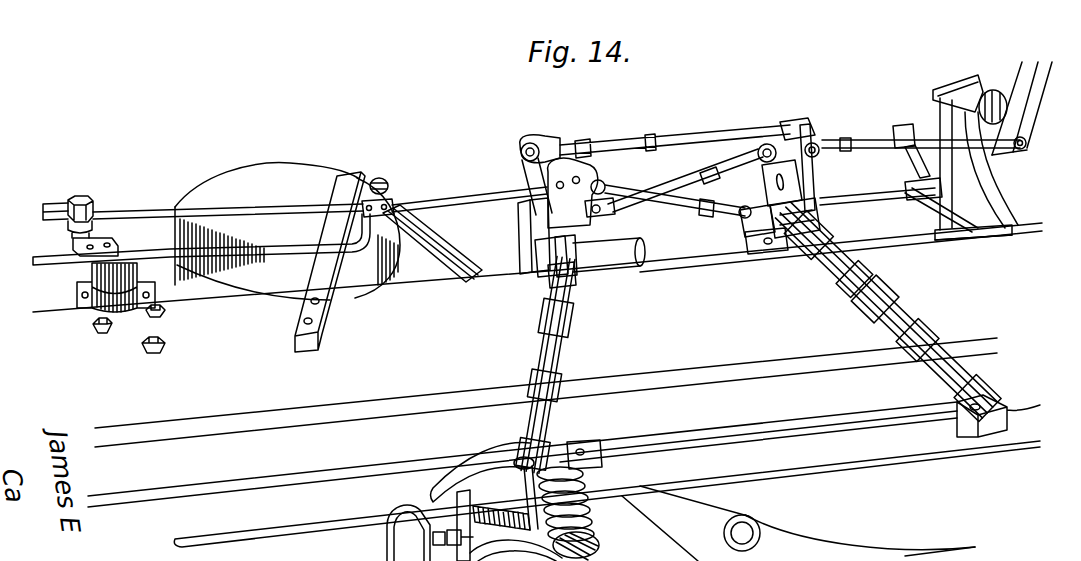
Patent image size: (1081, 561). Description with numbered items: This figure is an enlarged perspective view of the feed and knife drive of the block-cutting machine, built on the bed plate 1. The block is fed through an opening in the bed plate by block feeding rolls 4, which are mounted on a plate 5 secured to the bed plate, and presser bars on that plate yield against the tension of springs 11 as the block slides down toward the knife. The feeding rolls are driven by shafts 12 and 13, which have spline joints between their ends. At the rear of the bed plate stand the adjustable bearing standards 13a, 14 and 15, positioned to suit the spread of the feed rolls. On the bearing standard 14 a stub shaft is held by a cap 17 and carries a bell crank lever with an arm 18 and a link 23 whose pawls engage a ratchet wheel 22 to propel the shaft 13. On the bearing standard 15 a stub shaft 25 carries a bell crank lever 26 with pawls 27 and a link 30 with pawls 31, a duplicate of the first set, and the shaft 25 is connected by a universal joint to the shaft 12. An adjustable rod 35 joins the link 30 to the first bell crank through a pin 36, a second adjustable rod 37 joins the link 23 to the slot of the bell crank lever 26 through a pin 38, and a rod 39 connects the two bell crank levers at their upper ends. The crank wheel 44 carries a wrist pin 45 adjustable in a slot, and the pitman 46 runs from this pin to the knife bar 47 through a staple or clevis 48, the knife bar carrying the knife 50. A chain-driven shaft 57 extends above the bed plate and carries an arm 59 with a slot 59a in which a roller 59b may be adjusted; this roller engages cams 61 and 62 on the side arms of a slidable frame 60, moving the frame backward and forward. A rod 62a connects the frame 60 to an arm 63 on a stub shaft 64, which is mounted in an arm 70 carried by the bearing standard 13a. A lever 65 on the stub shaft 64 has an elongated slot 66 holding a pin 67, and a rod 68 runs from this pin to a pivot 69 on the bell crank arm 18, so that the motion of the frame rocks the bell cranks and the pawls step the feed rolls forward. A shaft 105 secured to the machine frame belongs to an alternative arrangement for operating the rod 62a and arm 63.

The bed plate 1 is at (537, 385).
The block feeding rolls 4 is at (650, 515).
The plate 5 is at (333, 549).
The springs 11 is at (497, 530).
The shaft 12 is at (568, 322).
The shaft 13 is at (885, 292).
The bearing standard 13a is at (990, 221).
The bearing standard 14 is at (768, 247).
The bearing standard 15 is at (537, 260).
The cap 17 is at (807, 212).
The arm of bell crank lever 18 is at (807, 168).
The ratchet wheel 22 is at (823, 205).
The link 23 is at (789, 183).
The stub shaft 25 is at (587, 243).
The bell crank lever 26 is at (530, 199).
The pawls 27 is at (520, 237).
The link 30 is at (547, 190).
The pawls 31 is at (528, 220).
The adjustable rod 35 is at (687, 213).
The pin 36 is at (748, 235).
The adjustable rod 37 is at (672, 178).
The pin 38 is at (597, 220).
The rod 39 is at (682, 142).
The crank wheel 44 is at (287, 231).
The wrist pin 45 is at (376, 184).
The pitman 46 is at (435, 255).
The knife bar 47 is at (843, 541).
The staple or clevis 48 is at (747, 513).
The knife 50 is at (913, 556).
The shaft 57 is at (123, 272).
The arm 59 is at (68, 233).
The slot 59a is at (95, 237).
The roller 59b is at (93, 201).
The frame 60 is at (242, 248).
The cam 61 is at (56, 205).
The cam 62 is at (95, 237).
The rod 62a is at (467, 200).
The arm 63 is at (935, 113).
The stub shaft 64 is at (1008, 107).
The lever 65 is at (1035, 127).
The elongated slot 66 is at (1025, 133).
The pin 67 is at (1023, 144).
The rod 68 is at (917, 162).
The pivot connection 69 is at (825, 147).
The arm 70 is at (975, 175).
The shaft 105 is at (860, 193).